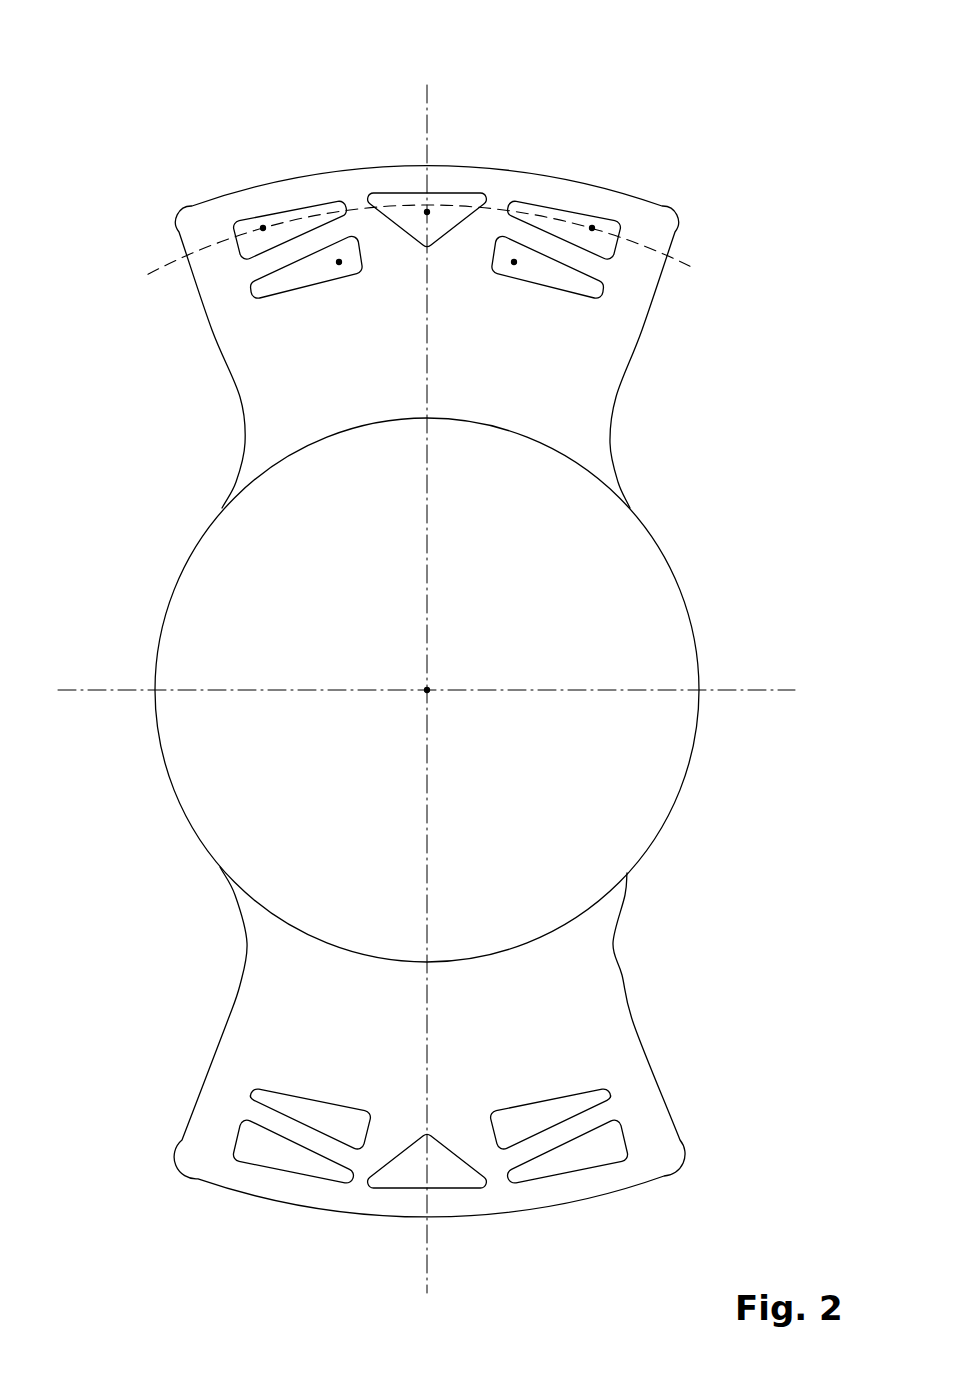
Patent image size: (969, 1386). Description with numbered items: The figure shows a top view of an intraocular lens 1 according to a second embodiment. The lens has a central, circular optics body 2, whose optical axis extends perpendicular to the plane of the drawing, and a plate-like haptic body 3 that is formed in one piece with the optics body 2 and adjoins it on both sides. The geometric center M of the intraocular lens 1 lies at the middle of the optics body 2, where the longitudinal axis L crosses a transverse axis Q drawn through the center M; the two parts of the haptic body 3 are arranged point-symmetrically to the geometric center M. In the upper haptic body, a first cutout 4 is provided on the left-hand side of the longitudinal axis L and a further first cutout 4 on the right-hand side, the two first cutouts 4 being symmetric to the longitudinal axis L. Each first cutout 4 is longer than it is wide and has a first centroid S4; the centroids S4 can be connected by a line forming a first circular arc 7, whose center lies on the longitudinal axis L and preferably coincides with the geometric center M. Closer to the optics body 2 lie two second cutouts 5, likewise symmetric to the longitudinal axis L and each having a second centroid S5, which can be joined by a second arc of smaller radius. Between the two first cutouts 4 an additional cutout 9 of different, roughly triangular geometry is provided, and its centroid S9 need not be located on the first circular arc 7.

The intraocular lens 1 is at (745, 78).
The optics body 2 is at (668, 782).
The haptic body 3 is at (652, 410).
The first cutout 4 is at (292, 207).
The second cutout 5 is at (275, 298).
The first circular arc 7 is at (690, 266).
The additional cutout 9 is at (397, 193).
The first centroid S4 is at (263, 228).
The second centroid S5 is at (339, 262).
The centroid of the additional cutout S9 is at (427, 212).
The geometric center M is at (427, 690).
The transverse axis Q is at (76, 690).
The longitudinal axis L is at (430, 1280).